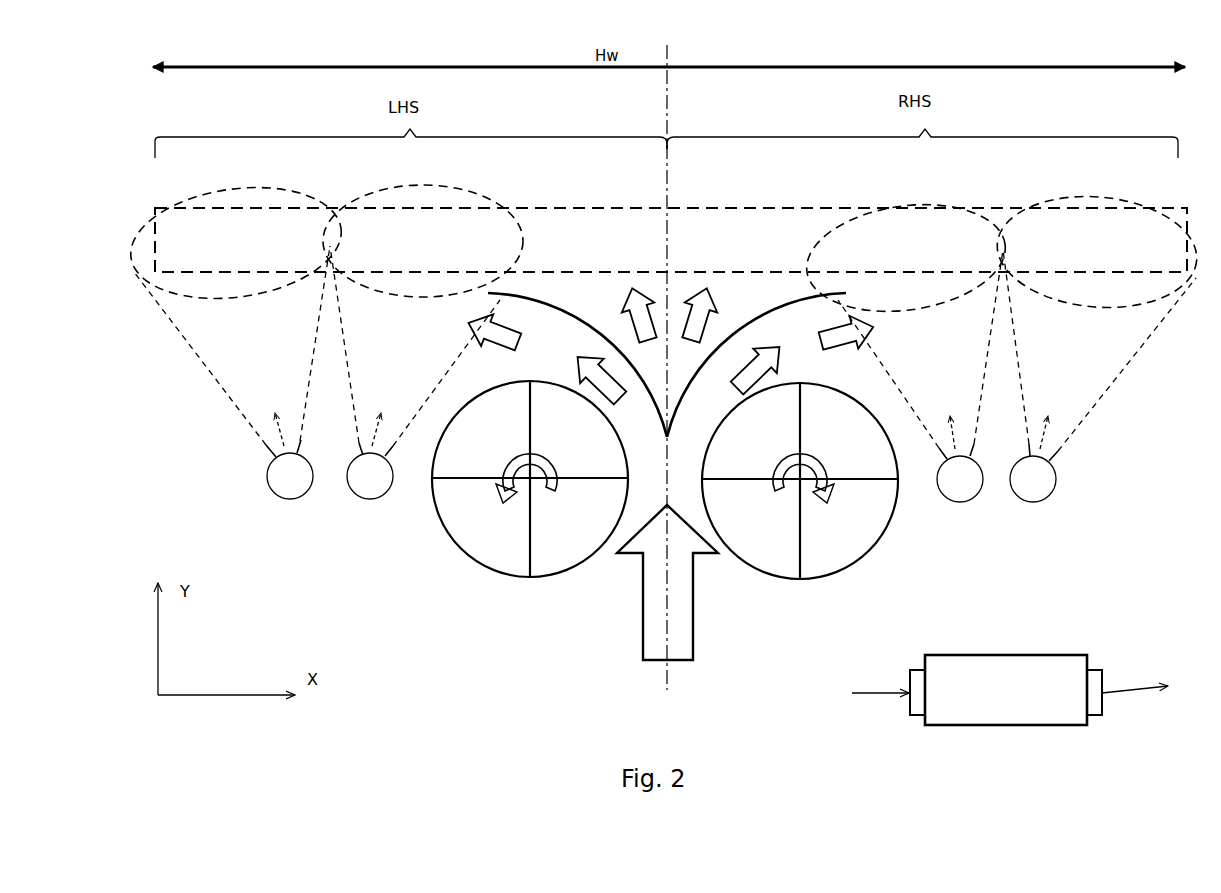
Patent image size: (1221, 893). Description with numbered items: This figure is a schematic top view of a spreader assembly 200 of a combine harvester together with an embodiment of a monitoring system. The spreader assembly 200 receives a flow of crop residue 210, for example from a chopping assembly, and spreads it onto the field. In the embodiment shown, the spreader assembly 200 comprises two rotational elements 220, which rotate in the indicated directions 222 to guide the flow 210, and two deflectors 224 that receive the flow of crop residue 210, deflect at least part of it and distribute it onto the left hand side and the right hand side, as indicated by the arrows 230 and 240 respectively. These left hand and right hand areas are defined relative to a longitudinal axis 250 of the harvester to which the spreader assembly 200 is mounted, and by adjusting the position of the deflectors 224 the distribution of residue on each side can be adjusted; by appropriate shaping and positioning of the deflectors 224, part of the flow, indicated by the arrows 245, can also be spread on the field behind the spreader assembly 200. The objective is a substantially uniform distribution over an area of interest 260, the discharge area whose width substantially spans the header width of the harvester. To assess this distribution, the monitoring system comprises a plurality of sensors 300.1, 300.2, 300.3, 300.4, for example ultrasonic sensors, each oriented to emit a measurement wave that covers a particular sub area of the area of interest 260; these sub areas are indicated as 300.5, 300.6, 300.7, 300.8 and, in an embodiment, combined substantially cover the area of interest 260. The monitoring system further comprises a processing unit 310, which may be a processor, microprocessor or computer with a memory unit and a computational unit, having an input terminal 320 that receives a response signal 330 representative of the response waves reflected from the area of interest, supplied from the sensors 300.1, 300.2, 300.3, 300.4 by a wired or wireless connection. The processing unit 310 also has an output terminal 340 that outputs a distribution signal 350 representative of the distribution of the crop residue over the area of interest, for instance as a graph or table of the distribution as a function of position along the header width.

The spreader assembly 200 is at (428, 576).
The flow of crop residue 210 is at (655, 622).
The rotational element 220 is at (454, 515).
The direction of rotation 222 is at (540, 456).
The deflector 224 is at (555, 296).
The arrows indicating distribution onto the left hand side 230 is at (503, 345).
The arrows indicating distribution onto the right hand side 240 is at (838, 350).
The arrows indicating residue spread behind the spreader assembly 245 is at (705, 318).
The longitudinal axis 250 is at (665, 104).
The area of interest 260 is at (638, 207).
The sensor 300.1 is at (288, 490).
The sensor 300.2 is at (368, 483).
The sensor 300.3 is at (965, 488).
The sensor 300.4 is at (1038, 485).
The sub area 300.5 is at (236, 188).
The sub area 300.6 is at (438, 190).
The sub area 300.7 is at (940, 198).
The sub area 300.8 is at (1050, 197).
The processing unit 310 is at (1020, 655).
The input terminal 320 is at (912, 680).
The response signal 330 is at (886, 695).
The output terminal 340 is at (1103, 675).
The distribution signal 350 is at (1132, 694).